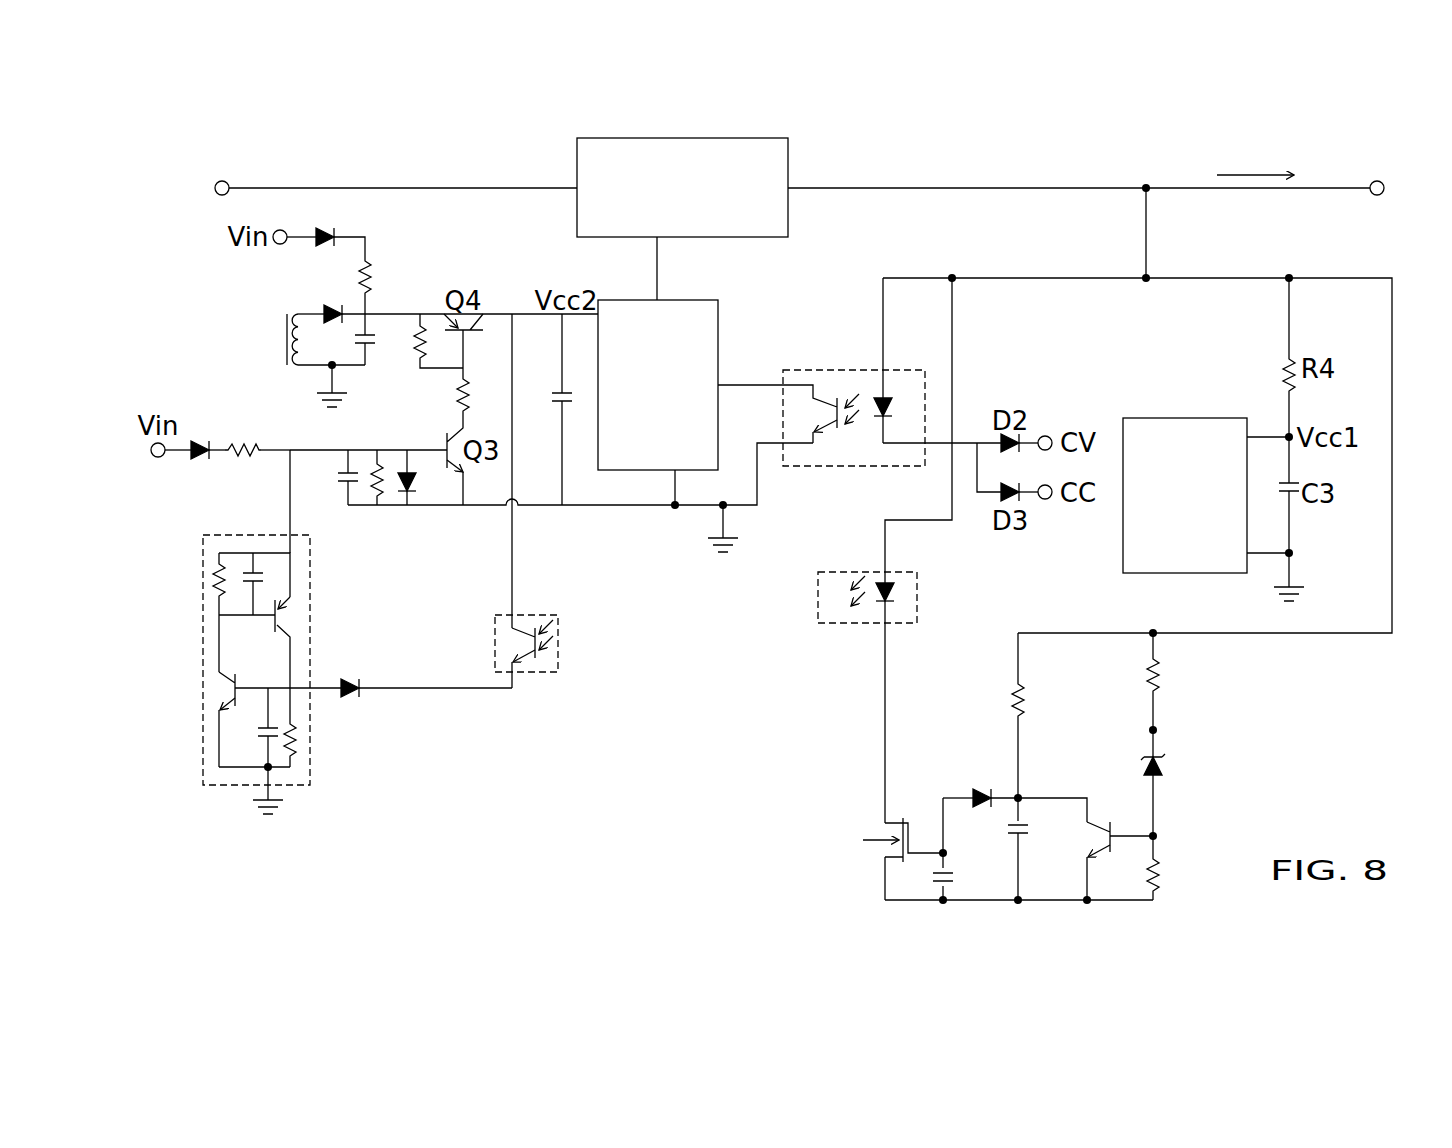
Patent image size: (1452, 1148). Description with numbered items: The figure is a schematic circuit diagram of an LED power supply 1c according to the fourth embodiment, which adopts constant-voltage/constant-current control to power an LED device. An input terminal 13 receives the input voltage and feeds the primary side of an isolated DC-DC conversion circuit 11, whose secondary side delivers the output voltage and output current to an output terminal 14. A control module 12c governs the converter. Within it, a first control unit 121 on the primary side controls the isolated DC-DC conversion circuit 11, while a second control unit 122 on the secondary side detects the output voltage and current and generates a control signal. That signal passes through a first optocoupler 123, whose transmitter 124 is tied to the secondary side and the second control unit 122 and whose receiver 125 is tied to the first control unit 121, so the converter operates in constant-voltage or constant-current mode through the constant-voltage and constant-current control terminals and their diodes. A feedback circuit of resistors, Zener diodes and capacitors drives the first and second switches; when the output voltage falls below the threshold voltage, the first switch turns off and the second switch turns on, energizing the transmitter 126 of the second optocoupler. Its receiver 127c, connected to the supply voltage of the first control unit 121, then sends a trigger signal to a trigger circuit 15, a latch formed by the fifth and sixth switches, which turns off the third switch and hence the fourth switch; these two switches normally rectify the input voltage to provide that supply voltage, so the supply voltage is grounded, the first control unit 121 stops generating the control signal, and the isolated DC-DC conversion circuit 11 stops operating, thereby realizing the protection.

The LED power supply 1c is at (1398, 148).
The isolated DC-DC conversion circuit 11 is at (667, 138).
The control module 12c is at (595, 810).
The input terminal 13 is at (221, 181).
The output terminal 14 is at (1371, 196).
The trigger circuit 15 is at (310, 580).
The first control unit 121 is at (645, 298).
The second control unit 122 is at (1177, 418).
The first optocoupler 123 is at (815, 466).
The transmitter 124 is at (881, 395).
The receiver 125 is at (823, 395).
The transmitter 126 is at (818, 598).
The receiver 127c is at (558, 640).